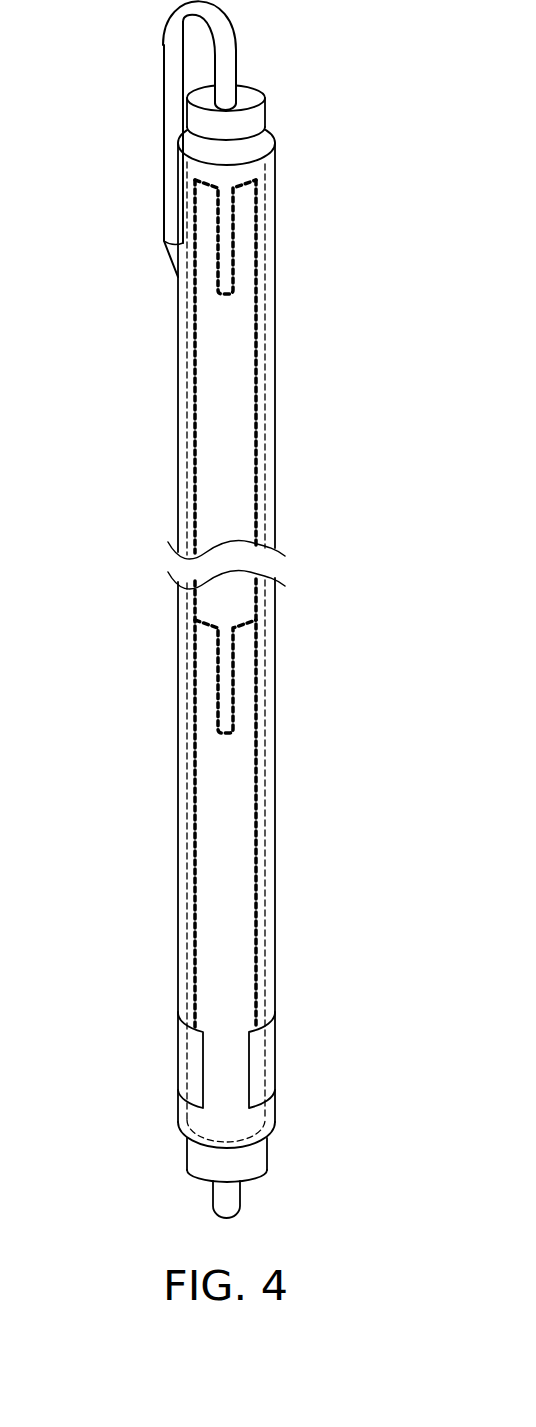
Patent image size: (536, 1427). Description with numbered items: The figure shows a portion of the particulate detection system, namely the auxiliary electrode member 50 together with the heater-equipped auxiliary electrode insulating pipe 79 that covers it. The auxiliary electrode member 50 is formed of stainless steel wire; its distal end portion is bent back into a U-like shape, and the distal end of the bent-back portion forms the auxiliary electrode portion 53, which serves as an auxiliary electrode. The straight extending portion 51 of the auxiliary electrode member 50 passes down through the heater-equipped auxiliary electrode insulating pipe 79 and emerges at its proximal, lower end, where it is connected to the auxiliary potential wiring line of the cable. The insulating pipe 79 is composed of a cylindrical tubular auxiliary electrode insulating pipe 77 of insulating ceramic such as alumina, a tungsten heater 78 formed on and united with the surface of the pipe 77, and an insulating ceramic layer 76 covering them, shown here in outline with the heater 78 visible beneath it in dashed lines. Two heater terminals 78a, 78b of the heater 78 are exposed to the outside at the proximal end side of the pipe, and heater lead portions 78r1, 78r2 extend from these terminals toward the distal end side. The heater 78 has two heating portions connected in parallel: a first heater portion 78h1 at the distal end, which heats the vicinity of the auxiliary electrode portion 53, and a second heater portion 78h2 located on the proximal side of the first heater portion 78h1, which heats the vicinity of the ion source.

The auxiliary electrode member 50 is at (233, 1201).
The extending portion 51 is at (227, 68).
The auxiliary electrode portion 53 is at (172, 123).
The insulating ceramic layer 76 is at (276, 347).
The auxiliary electrode insulating pipe 77 is at (244, 140).
The heater 78 is at (215, 644).
The heater terminal 78a is at (192, 1068).
The heater terminal 78b is at (262, 1060).
The first heater portion 78h1 is at (221, 297).
The second heater portion 78h2 is at (238, 698).
The heater lead portion 78r1 is at (196, 918).
The heater lead portion 78r2 is at (262, 935).
The auxiliary electrode insulating pipe with a heater 79 is at (365, 133).